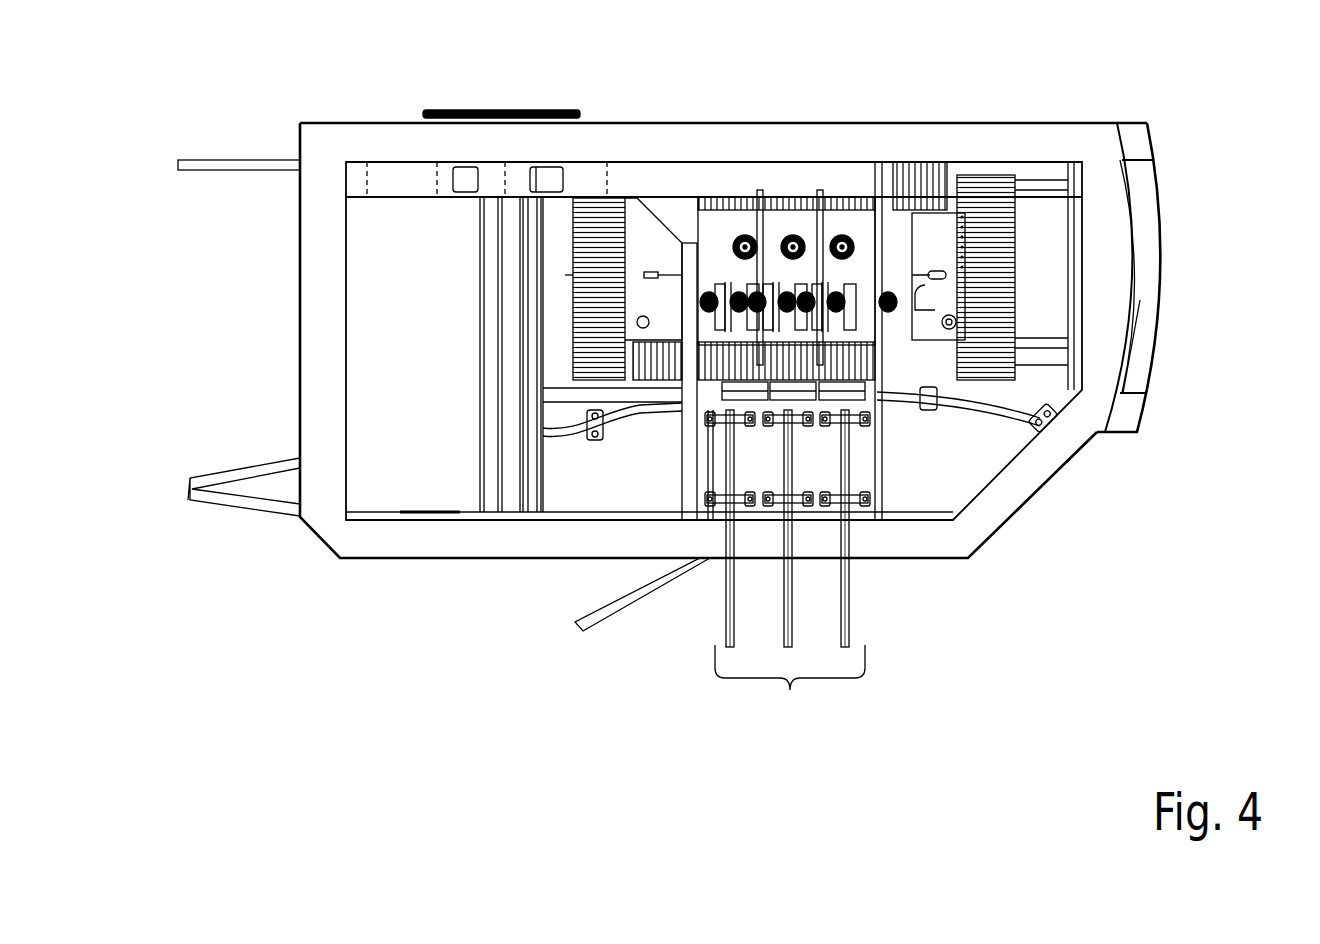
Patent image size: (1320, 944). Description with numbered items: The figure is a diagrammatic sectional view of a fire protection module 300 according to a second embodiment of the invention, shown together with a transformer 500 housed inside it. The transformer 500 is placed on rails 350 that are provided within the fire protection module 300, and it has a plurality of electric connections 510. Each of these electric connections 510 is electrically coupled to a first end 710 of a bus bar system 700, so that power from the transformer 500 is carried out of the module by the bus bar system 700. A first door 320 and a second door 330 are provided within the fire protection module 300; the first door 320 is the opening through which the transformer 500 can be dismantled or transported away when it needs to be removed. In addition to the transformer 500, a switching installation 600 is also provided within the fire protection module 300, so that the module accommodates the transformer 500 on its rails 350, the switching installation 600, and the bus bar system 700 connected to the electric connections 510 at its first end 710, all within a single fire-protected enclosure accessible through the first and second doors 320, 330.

The fire protection module 300 is at (1080, 475).
The first door 320 is at (1160, 268).
The second door 330 is at (268, 468).
The rails 350 is at (1047, 176).
The transformer 500 is at (938, 250).
The electric connections 510 is at (733, 290).
The switching installation 600 is at (430, 257).
The bus bar system 700 is at (790, 571).
The first end of bus bar system 710 is at (848, 440).